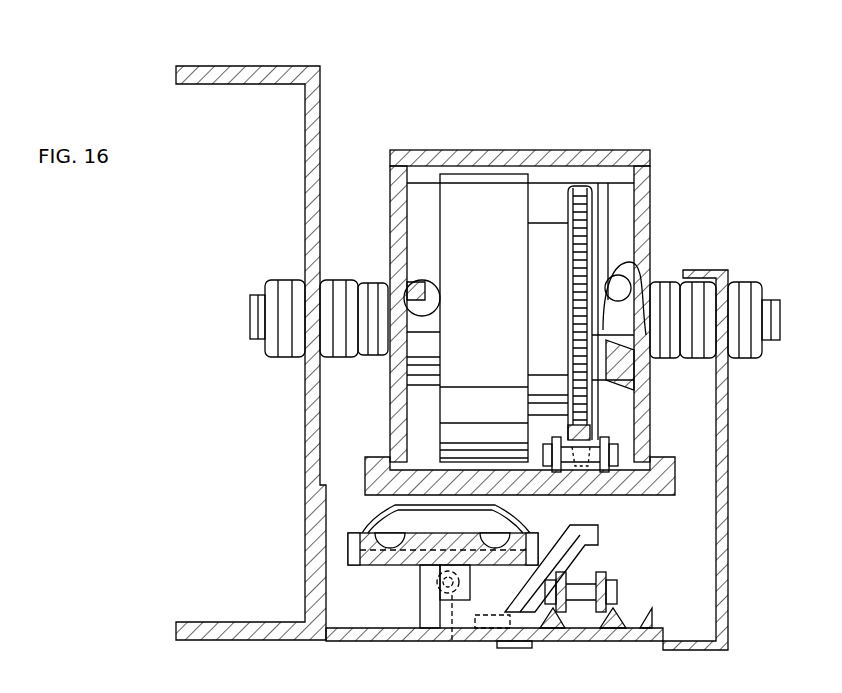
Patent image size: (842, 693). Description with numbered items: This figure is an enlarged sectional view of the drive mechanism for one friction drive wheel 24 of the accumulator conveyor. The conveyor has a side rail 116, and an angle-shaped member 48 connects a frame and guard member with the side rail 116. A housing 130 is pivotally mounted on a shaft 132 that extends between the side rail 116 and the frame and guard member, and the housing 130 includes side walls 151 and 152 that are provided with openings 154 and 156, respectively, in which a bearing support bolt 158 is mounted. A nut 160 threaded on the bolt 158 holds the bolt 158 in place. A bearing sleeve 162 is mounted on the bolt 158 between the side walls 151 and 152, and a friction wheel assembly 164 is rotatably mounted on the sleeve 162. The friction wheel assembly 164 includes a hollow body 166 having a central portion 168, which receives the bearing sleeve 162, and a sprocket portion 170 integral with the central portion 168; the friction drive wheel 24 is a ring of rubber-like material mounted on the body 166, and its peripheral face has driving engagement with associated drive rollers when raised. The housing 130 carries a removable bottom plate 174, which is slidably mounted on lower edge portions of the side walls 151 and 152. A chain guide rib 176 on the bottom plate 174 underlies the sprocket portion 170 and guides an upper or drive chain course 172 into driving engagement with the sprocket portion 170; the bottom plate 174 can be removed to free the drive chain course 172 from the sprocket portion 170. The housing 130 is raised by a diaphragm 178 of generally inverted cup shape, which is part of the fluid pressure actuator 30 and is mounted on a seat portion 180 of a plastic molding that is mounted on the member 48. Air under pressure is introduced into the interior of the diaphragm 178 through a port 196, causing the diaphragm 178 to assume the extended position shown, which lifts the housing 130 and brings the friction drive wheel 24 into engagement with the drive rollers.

The side rail 116 is at (316, 105).
The angle-shaped member 48 is at (352, 642).
The housing 130 is at (532, 295).
The side wall 151 is at (398, 170).
The side wall 152 is at (647, 202).
The bottom plate 174 is at (636, 500).
The friction drive wheel 24 is at (478, 162).
The central portion 168 is at (432, 332).
The friction wheel assembly 164 is at (436, 395).
The opening 154 is at (427, 310).
The sprocket portion 170 is at (578, 184).
The bearing sleeve 162 is at (636, 266).
The hollow body 166 is at (622, 390).
The shaft 132 is at (250, 305).
The bearing support bolt 158 is at (380, 350).
The opening 156 is at (657, 308).
The nut 160 is at (660, 354).
The upper or drive chain course 172 is at (610, 444).
The diaphragm 178 is at (380, 520).
The seat portion 180 is at (388, 554).
The fluid pressure actuator 30 is at (340, 532).
The port 196 is at (452, 622).
The chain guide rib 176 is at (582, 482).